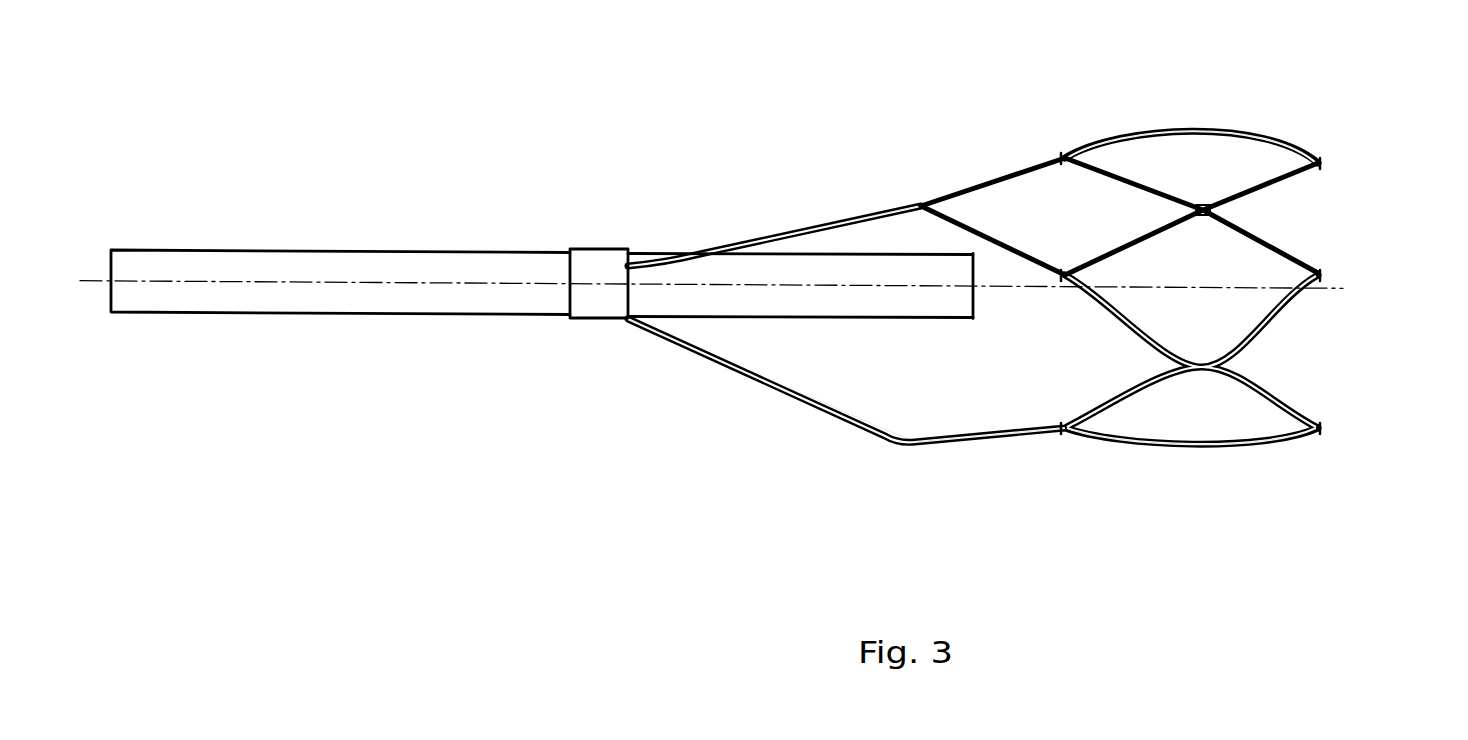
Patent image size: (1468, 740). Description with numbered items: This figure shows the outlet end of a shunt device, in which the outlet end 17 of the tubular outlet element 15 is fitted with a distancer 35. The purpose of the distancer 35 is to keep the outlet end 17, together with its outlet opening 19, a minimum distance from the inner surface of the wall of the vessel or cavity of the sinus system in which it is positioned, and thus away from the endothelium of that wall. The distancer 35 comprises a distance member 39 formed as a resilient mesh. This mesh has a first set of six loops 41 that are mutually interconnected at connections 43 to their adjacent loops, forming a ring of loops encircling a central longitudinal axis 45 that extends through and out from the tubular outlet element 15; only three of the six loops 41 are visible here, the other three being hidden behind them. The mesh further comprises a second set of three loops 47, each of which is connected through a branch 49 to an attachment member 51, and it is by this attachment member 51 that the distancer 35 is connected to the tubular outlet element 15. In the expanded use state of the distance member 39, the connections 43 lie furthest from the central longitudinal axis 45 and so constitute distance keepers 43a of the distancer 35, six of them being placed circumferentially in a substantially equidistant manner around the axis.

The tubular outlet element 15 is at (207, 268).
The outlet end 17 is at (815, 273).
The outlet opening 19 is at (973, 286).
The distancer 35 is at (1030, 336).
The distance member 39 is at (1108, 138).
The loops 41 is at (1307, 150).
The connections 43 is at (1203, 206).
The distance keepers 43a is at (1193, 443).
The central longitudinal axis 45 is at (1343, 288).
The second set of loops 47 is at (988, 180).
The branch 49 is at (837, 218).
The attachment member 51 is at (602, 266).